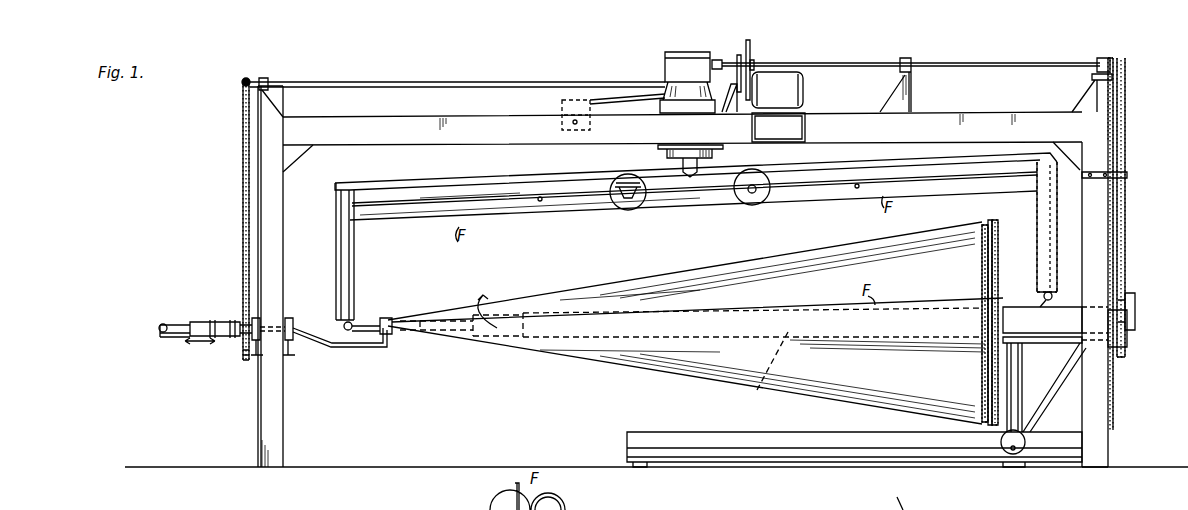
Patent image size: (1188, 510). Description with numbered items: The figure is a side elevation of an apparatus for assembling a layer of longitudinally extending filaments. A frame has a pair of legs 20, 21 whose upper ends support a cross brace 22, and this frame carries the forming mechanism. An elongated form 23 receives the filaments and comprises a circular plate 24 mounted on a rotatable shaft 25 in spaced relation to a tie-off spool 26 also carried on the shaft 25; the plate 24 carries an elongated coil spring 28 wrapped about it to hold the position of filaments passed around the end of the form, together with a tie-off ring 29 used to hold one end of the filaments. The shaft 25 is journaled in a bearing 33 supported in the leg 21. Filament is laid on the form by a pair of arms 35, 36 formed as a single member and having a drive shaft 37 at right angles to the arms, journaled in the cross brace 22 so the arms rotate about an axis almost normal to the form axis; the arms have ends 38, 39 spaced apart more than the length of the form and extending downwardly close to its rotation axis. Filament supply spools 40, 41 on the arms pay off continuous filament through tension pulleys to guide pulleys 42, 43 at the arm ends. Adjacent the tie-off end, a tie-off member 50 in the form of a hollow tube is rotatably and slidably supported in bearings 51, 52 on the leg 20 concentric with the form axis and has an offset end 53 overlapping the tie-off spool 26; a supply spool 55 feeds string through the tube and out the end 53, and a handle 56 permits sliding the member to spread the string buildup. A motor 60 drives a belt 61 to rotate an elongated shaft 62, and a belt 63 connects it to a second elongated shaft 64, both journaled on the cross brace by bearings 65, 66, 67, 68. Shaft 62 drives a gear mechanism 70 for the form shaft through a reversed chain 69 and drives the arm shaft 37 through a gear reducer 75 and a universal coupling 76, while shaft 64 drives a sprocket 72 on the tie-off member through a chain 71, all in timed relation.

The leg 20 is at (275, 418).
The leg 21 is at (1100, 418).
The cross brace 22 is at (452, 117).
The elongated form 23 is at (650, 380).
The circular plate 24 is at (994, 273).
The rotatable shaft 25 is at (760, 390).
The tie-off spool 26 is at (397, 313).
The coil spring 28 is at (996, 222).
The tie-off ring 29 is at (982, 225).
The bearing 33 is at (1063, 310).
The arm 35 is at (505, 207).
The arm 36 is at (895, 166).
The drive shaft 37 is at (700, 165).
The arm end 38 is at (355, 274).
The arm end 39 is at (1037, 234).
The filament supply spool 40 is at (762, 203).
The filament supply spool 41 is at (626, 211).
The guide pulley 42 is at (357, 316).
The guide pulley 43 is at (345, 328).
The tie-off member 50 is at (242, 333).
The bearing 51 is at (292, 318).
The bearing 52 is at (259, 315).
The tie-off member end 53 is at (360, 348).
The supply spool 55 is at (163, 322).
The handle 56 is at (213, 322).
The motor 60 is at (798, 87).
The belt 61 is at (750, 42).
The elongated shaft 62 is at (990, 62).
The belt 63 is at (739, 55).
The elongated shaft 64 is at (398, 82).
The bearing 65 is at (906, 58).
The bearing 66 is at (1103, 58).
The bearing 67 is at (754, 68).
The bearing 68 is at (266, 78).
The reversed chain 69 is at (1115, 88).
The gear mechanism 70 is at (1127, 355).
The chain 71 is at (243, 143).
The sprocket 72 is at (248, 362).
The gear reducer 75 is at (680, 52).
The universal coupling 76 is at (719, 60).